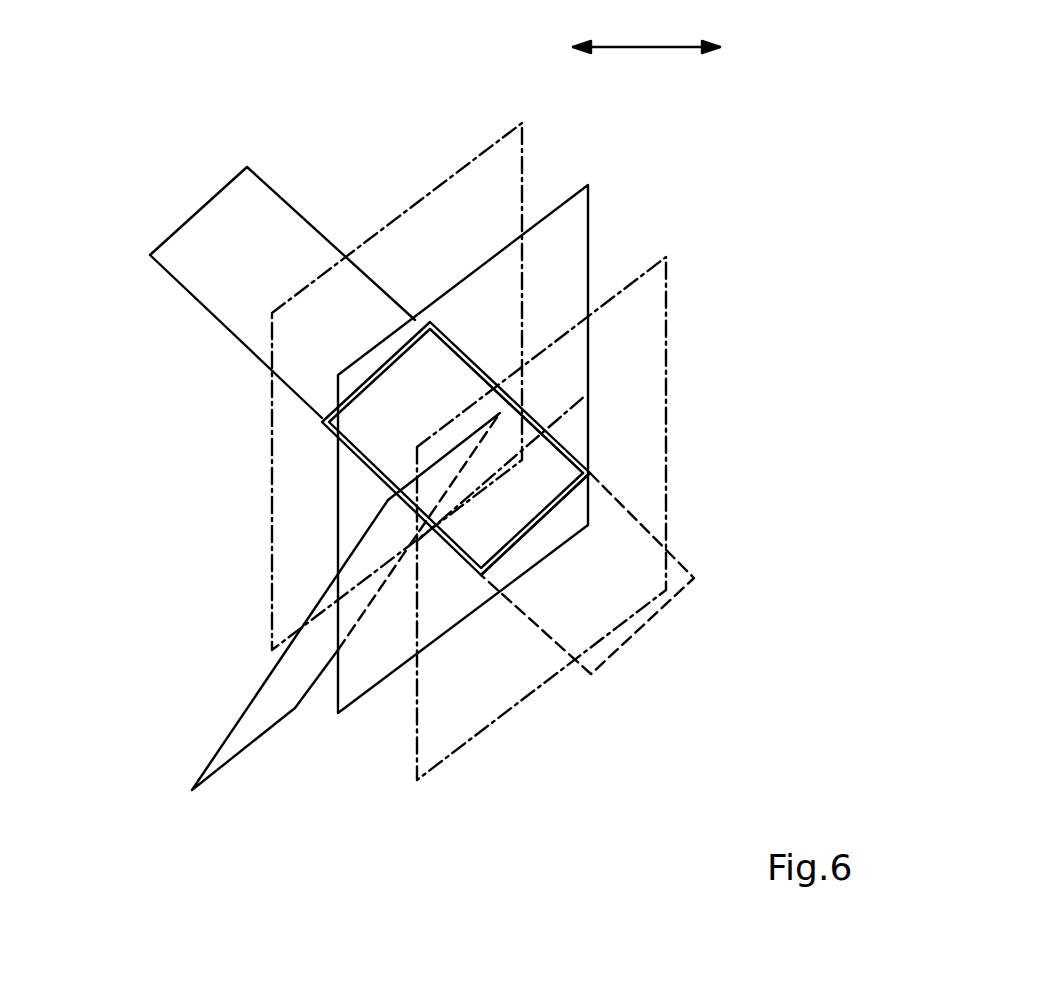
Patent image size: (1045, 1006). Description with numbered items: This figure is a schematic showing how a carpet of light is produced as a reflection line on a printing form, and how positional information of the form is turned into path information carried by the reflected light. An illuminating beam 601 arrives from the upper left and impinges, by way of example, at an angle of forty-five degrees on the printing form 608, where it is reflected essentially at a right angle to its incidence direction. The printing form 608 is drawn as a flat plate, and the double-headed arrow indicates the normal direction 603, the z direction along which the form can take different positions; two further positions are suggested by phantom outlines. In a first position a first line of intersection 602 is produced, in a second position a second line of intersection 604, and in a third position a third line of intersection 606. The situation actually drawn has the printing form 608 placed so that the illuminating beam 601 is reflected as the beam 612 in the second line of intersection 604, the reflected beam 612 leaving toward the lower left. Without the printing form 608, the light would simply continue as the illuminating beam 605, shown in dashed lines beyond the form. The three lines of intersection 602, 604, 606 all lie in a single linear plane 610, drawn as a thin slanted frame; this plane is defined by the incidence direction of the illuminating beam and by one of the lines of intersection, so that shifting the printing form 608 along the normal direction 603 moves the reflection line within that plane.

The illuminating beam 601 is at (168, 283).
The first line of intersection 602 is at (420, 360).
The normal direction 603 is at (646, 32).
The second line of intersection 604 is at (495, 426).
The illuminating beam continuation 605 is at (668, 557).
The third line of intersection 606 is at (560, 512).
The printing form 608 is at (337, 718).
The linear plane 610 is at (322, 420).
The reflected beam 612 is at (278, 707).